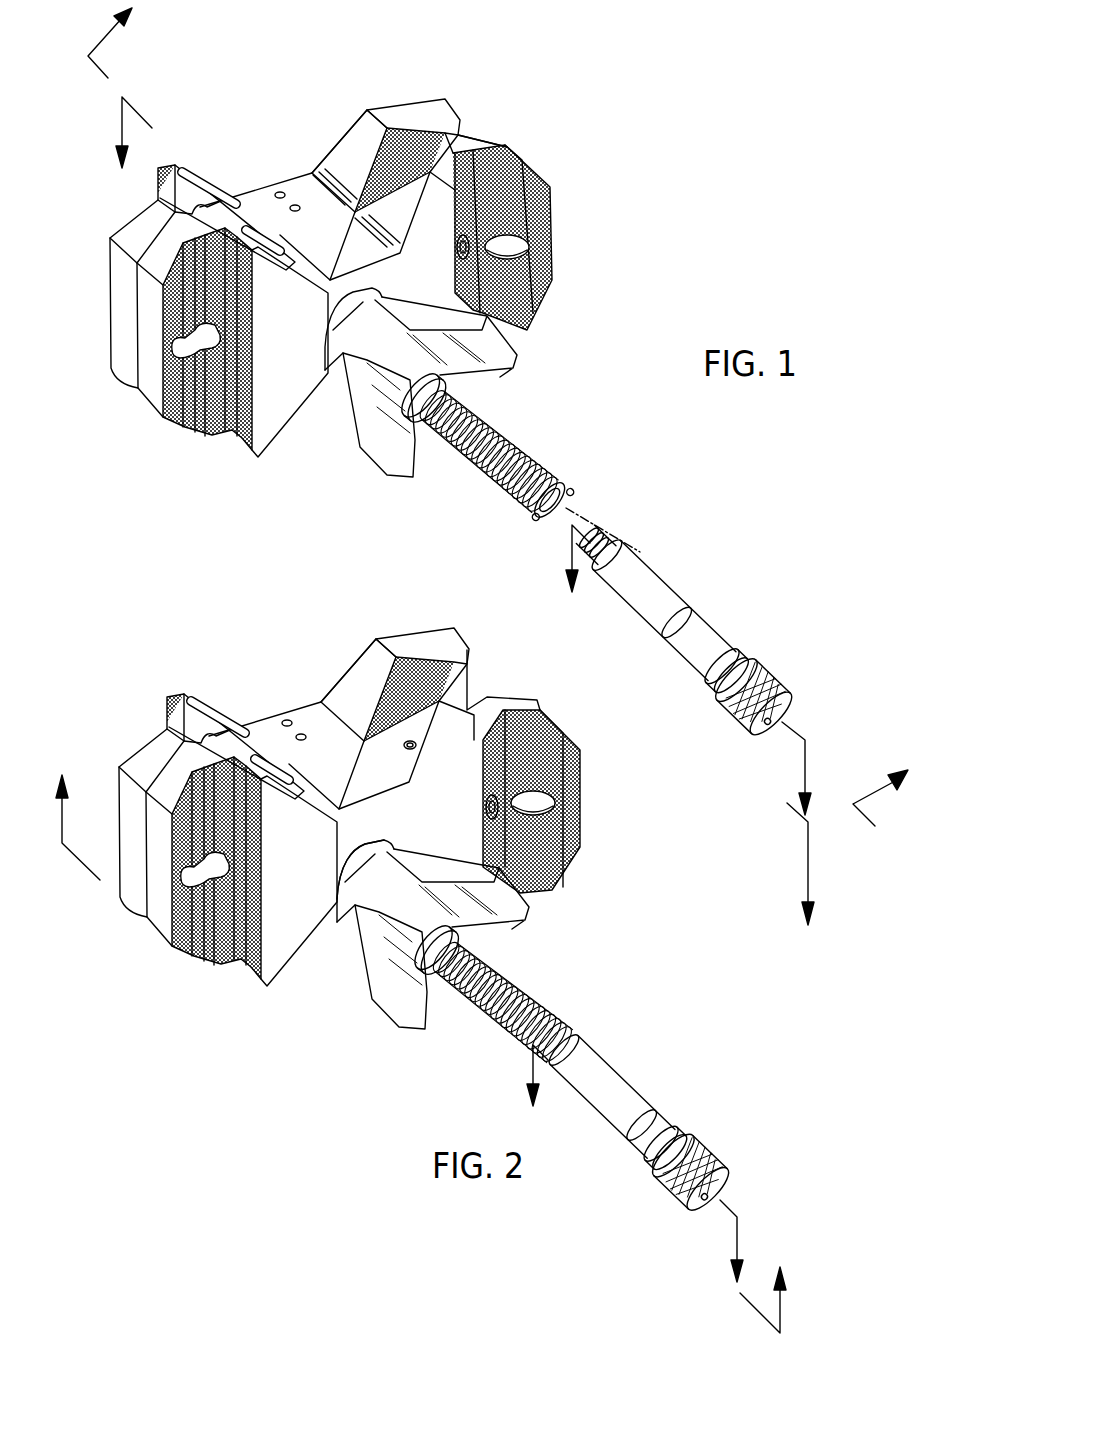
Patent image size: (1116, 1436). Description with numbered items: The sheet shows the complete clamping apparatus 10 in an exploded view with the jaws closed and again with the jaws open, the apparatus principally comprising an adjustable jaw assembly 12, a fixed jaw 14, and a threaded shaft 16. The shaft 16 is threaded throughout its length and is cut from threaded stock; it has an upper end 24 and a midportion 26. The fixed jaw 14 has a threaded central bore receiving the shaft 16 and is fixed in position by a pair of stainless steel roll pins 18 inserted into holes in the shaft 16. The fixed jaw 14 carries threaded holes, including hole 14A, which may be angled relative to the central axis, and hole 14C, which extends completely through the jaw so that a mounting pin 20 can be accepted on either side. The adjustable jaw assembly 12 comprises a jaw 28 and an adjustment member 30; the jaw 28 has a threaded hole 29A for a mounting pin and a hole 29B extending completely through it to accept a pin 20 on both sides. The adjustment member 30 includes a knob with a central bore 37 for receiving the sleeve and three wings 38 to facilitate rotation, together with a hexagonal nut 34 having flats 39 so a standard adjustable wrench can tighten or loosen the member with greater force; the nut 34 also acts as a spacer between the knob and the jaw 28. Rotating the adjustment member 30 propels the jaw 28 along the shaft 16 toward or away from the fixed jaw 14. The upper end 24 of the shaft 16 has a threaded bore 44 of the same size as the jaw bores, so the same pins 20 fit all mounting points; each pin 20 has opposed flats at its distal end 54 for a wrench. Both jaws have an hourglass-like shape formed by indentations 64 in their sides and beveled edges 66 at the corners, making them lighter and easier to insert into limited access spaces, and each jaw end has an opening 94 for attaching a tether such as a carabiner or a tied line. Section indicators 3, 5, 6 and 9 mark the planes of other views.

In FIG. 1, the clamping apparatus 10 is at (658, 112).
In FIG. 2, the clamping apparatus 10 is at (632, 1163).
In FIG. 1, the adjustable jaw assembly 12 is at (585, 249).
In FIG. 2, the adjustable jaw assembly 12 is at (605, 817).
In FIG. 1, the fixed jaw 14 is at (347, 140).
In FIG. 2, the fixed jaw 14 is at (357, 657).
In FIG. 2, the threaded hole 14A is at (410, 740).
In FIG. 1, the threaded hole 14C is at (197, 200).
In FIG. 2, the threaded hole 14C is at (207, 710).
In FIG. 1, the threaded shaft 16 is at (470, 477).
In FIG. 2, the threaded shaft 16 is at (490, 1025).
In FIG. 1, the roll pins 18 is at (295, 205).
In FIG. 2, the roll pins 18 is at (301, 734).
In FIG. 1, the mounting pin 20 is at (735, 615).
In FIG. 2, the mounting pin 20 is at (688, 1091).
In FIG. 1, the upper end 24 is at (580, 492).
In FIG. 2, the upper end 24 is at (583, 1023).
In FIG. 2, the midportion 26 is at (533, 967).
In FIG. 1, the jaw 28 is at (540, 180).
In FIG. 2, the jaw 28 is at (577, 760).
In FIG. 1, the threaded hole 29A is at (463, 237).
In FIG. 1, the threaded hole 29B is at (240, 227).
In FIG. 2, the threaded hole 29B is at (270, 777).
In FIG. 1, the adjustment member 30 is at (436, 398).
In FIG. 2, the adjustment member 30 is at (380, 1037).
In FIG. 1, the hexagonal nut 34 is at (350, 395).
In FIG. 1, the central bore 37 is at (503, 410).
In FIG. 1, the wings 38 is at (330, 350).
In FIG. 1, the flats 39 is at (400, 307).
In FIG. 2, the flats 39 is at (422, 863).
In FIG. 1, the threaded bore 44 is at (535, 520).
In FIG. 1, the distal end 54 is at (742, 650).
In FIG. 2, the distal end 54 is at (692, 1137).
In FIG. 1, the indentations 64 is at (305, 180).
In FIG. 1, the beveled edges 66 is at (510, 143).
In FIG. 2, the beveled edges 66 is at (548, 690).
In FIG. 1, the opening 94 is at (513, 253).
In FIG. 2, the opening 94 is at (467, 713).
In FIG. 2, the section line 3- 3 is at (420, 1054).
In FIG. 1, the section line 5- 5 is at (487, 417).
In FIG. 1, the section line 6- 6 is at (465, 456).
In FIG. 1, the section line 9- 9 is at (688, 725).